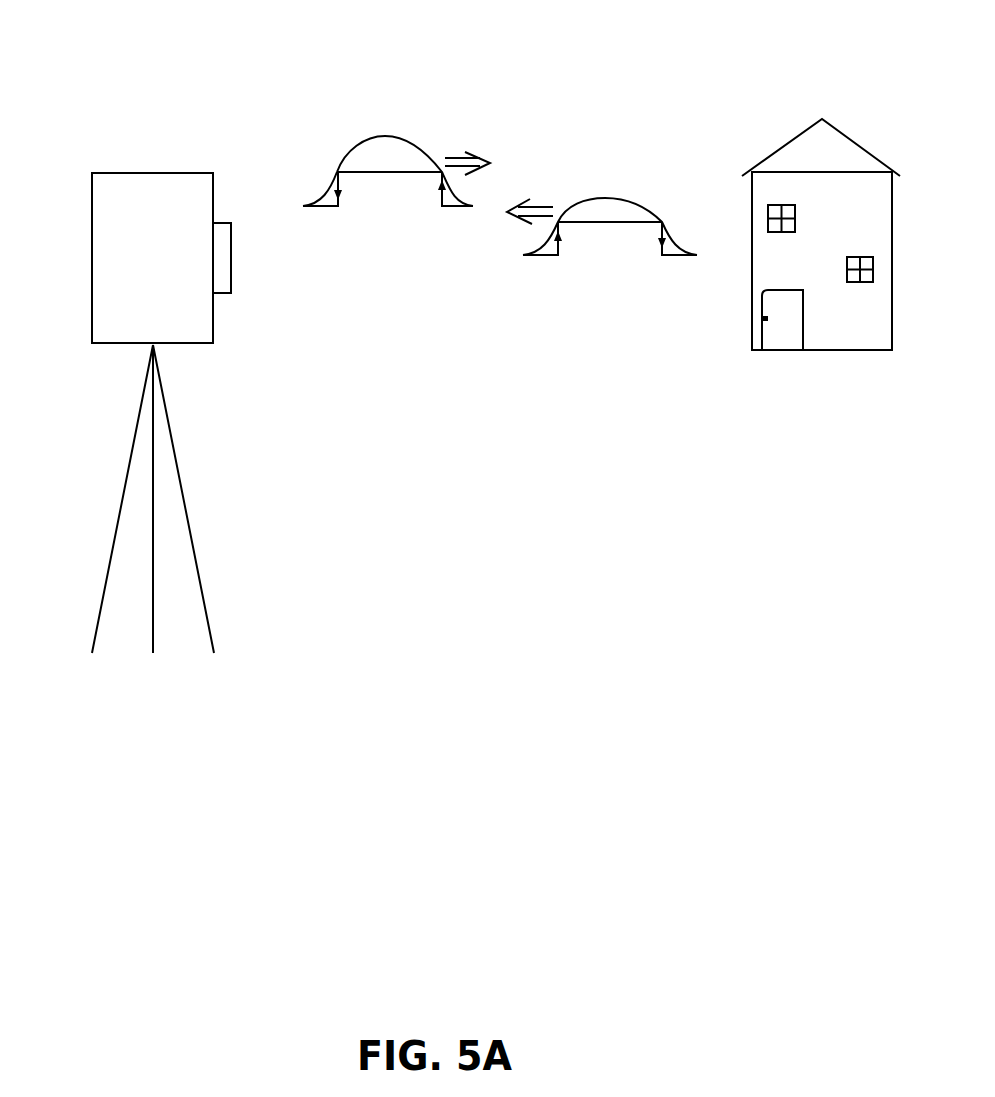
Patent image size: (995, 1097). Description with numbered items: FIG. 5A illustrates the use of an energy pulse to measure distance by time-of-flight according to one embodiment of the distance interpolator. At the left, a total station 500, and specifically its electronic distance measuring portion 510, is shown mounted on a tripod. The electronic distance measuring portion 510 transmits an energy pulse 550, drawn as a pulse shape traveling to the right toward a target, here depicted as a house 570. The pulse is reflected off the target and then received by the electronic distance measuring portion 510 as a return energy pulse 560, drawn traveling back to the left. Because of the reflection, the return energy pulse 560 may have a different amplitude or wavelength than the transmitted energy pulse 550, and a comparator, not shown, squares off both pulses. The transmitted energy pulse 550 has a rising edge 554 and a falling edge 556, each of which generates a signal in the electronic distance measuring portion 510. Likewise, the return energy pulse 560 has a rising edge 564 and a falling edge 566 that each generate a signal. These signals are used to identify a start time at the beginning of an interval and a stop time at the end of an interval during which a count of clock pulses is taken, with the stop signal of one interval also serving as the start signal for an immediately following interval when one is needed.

The total station 500 is at (80, 200).
The electronic distance measuring portion 510 is at (166, 196).
The transmitted energy pulse 550 is at (386, 128).
The rising edge 554 is at (442, 206).
The falling edge 556 is at (338, 206).
The return energy pulse 560 is at (609, 180).
The rising edge 564 is at (558, 256).
The falling edge 566 is at (662, 256).
The house (object) 570 is at (886, 132).